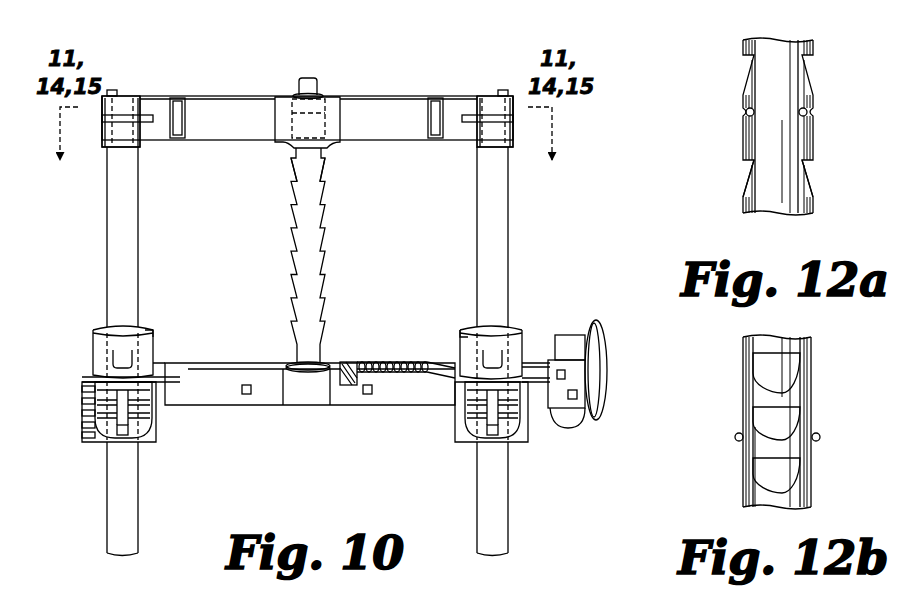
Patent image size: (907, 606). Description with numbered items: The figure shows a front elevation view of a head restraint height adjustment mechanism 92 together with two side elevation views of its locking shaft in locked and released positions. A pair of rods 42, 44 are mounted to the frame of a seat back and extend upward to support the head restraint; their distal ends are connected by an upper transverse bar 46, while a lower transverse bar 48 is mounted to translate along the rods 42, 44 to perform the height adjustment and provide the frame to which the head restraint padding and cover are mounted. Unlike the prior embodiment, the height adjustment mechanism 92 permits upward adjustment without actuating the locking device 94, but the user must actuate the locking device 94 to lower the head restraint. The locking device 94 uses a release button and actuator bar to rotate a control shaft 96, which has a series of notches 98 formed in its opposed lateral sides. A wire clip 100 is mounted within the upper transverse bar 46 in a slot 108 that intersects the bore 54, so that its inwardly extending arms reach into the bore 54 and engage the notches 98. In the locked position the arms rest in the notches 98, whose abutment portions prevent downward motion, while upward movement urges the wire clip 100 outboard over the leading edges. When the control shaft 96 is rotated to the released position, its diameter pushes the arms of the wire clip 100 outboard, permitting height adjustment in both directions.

In FIG. 10, the height adjustment mechanism 92 is at (170, 58).
In FIG. 10, the upper transverse bar 46 is at (463, 96).
In FIG. 10, the bore 54 is at (290, 133).
In FIG. 10, the slot 108 is at (330, 113).
In FIG. 10, the wire clip 100 is at (300, 98).
In FIG. 12A, the wire clip 100 is at (746, 112).
In FIG. 12B, the wire clip 100 is at (818, 437).
In FIG. 10, the notches 98 is at (323, 160).
In FIG. 12A, the notches 98 is at (750, 165).
In FIG. 12B, the notches 98 is at (783, 372).
In FIG. 10, the control shaft 96 is at (325, 268).
In FIG. 12A, the control shaft 96 is at (744, 150).
In FIG. 12B, the control shaft 96 is at (811, 453).
In FIG. 10, the lower transverse bar 48 is at (515, 327).
In FIG. 10, the locking device 94 is at (598, 322).
In FIG. 10, the rod 44 is at (140, 490).
In FIG. 10, the rod 42 is at (508, 490).